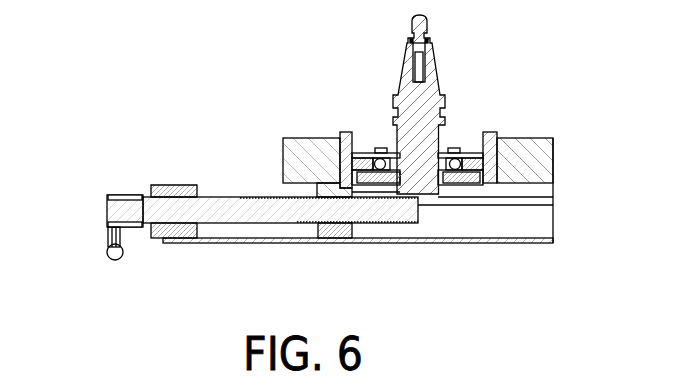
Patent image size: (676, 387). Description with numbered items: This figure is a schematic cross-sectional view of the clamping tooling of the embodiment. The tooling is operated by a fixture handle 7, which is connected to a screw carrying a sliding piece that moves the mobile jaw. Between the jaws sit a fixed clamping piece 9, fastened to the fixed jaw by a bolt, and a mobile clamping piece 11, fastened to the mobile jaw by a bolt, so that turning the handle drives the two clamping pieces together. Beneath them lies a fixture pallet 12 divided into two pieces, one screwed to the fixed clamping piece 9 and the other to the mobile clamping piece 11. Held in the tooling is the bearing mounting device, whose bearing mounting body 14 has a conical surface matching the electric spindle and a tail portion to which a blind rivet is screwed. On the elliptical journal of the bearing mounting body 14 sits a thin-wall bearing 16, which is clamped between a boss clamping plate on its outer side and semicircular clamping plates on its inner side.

The fixture handle 7 is at (108, 246).
The fixed clamping piece 9 is at (473, 153).
The mobile clamping piece 11 is at (380, 165).
The fixture pallet 12 is at (462, 178).
The bearing mounting body 14 is at (418, 121).
The thin-wall bearing 16 is at (377, 166).